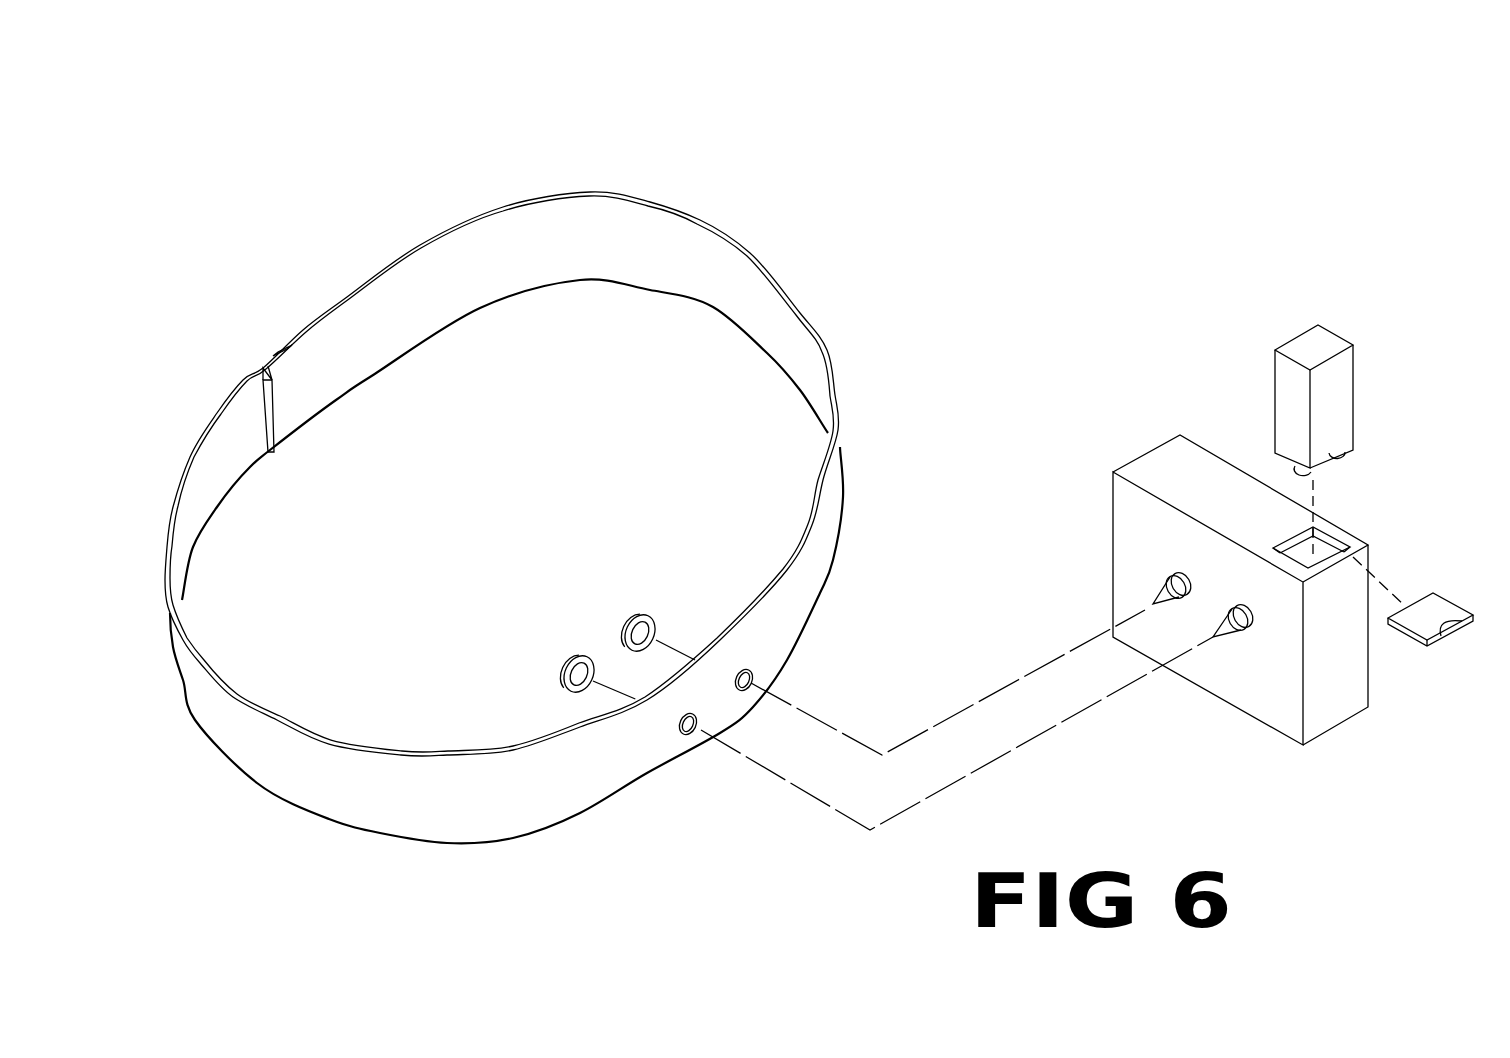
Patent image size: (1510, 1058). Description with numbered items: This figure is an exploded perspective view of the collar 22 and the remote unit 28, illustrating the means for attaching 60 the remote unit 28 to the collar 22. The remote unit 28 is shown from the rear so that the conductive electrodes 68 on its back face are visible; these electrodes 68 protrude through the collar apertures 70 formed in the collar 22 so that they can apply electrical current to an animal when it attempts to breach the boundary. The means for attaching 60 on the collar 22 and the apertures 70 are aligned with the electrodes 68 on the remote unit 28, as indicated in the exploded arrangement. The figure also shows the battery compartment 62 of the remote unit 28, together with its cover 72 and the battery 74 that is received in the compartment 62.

The collar 22 is at (335, 358).
The remote unit 28 is at (1235, 467).
The means for attaching 60 is at (570, 657).
The battery compartment 62 is at (1333, 545).
The conductive electrodes 68 is at (1153, 604).
The collar apertures 70 is at (747, 697).
The cover 72 is at (1442, 605).
The battery 74 is at (1320, 345).